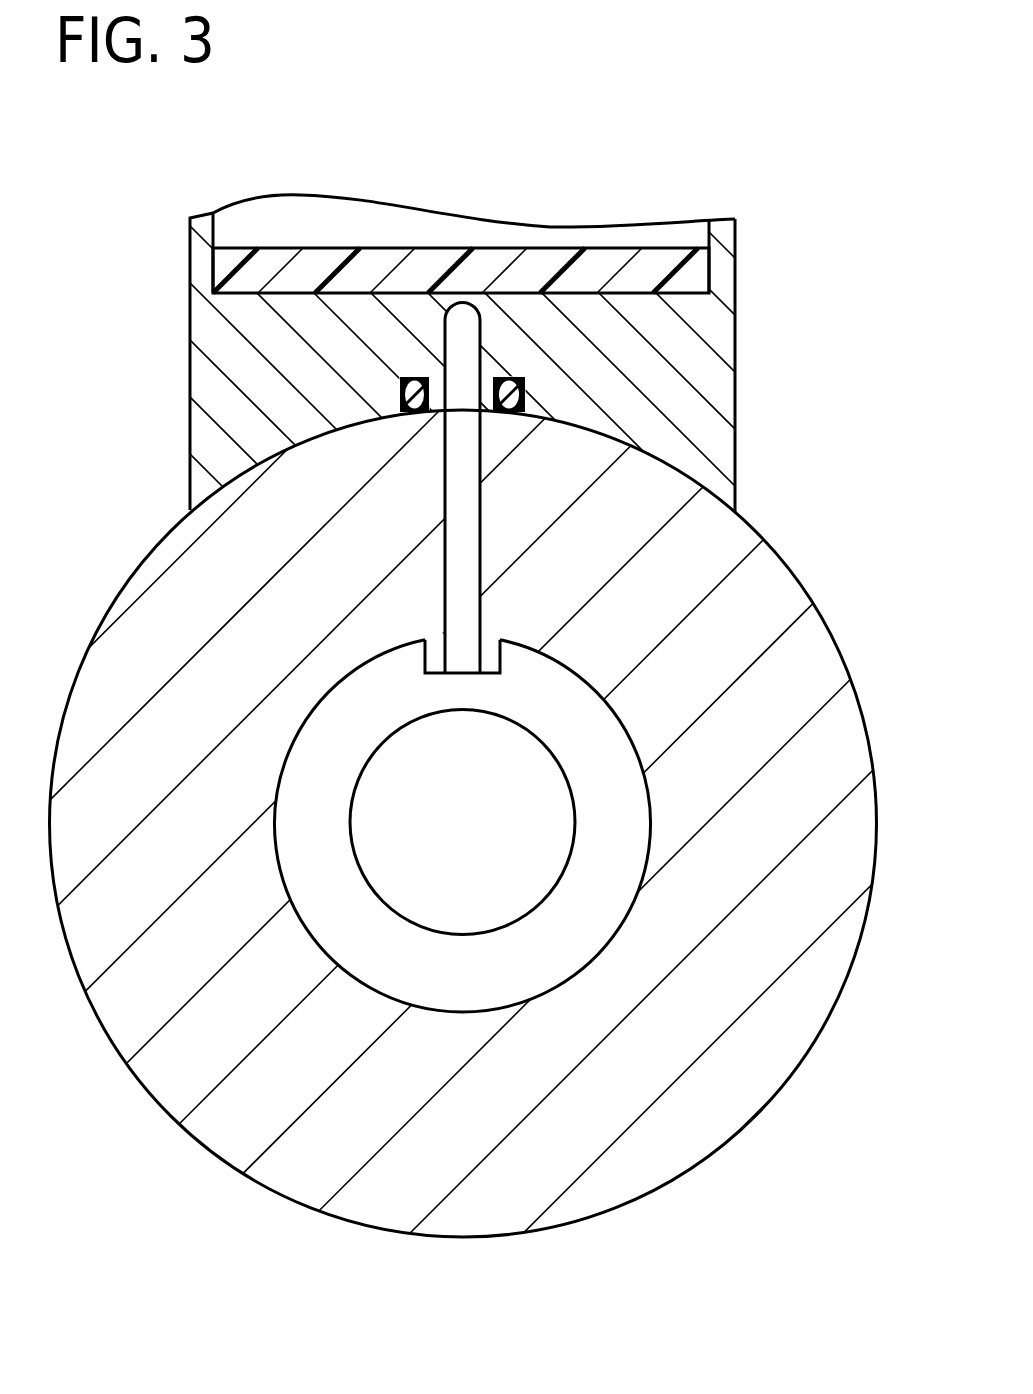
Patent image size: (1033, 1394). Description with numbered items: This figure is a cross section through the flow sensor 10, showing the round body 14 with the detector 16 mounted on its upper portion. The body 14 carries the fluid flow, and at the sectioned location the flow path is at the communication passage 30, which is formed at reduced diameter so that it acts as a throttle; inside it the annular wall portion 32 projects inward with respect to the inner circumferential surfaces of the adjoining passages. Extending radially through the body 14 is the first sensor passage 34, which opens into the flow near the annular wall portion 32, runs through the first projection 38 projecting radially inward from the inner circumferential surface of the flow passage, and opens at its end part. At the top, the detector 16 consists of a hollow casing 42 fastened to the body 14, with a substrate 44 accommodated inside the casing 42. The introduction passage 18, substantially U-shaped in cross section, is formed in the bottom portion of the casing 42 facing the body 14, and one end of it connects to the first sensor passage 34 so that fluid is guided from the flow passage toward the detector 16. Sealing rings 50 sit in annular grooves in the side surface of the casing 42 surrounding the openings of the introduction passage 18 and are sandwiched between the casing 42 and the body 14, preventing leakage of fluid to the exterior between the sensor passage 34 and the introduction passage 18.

The flow sensor 10 is at (753, 91).
The body 14 is at (810, 558).
The detector 16 is at (180, 351).
The introduction passage 18 is at (468, 330).
The communication passage 30 is at (377, 836).
The annular wall portion 32 is at (325, 743).
The first sensor passage 34 is at (457, 497).
The first projection 38 is at (440, 662).
The casing 42 is at (712, 347).
The substrate 44 is at (607, 262).
The sealing rings 50 is at (412, 393).